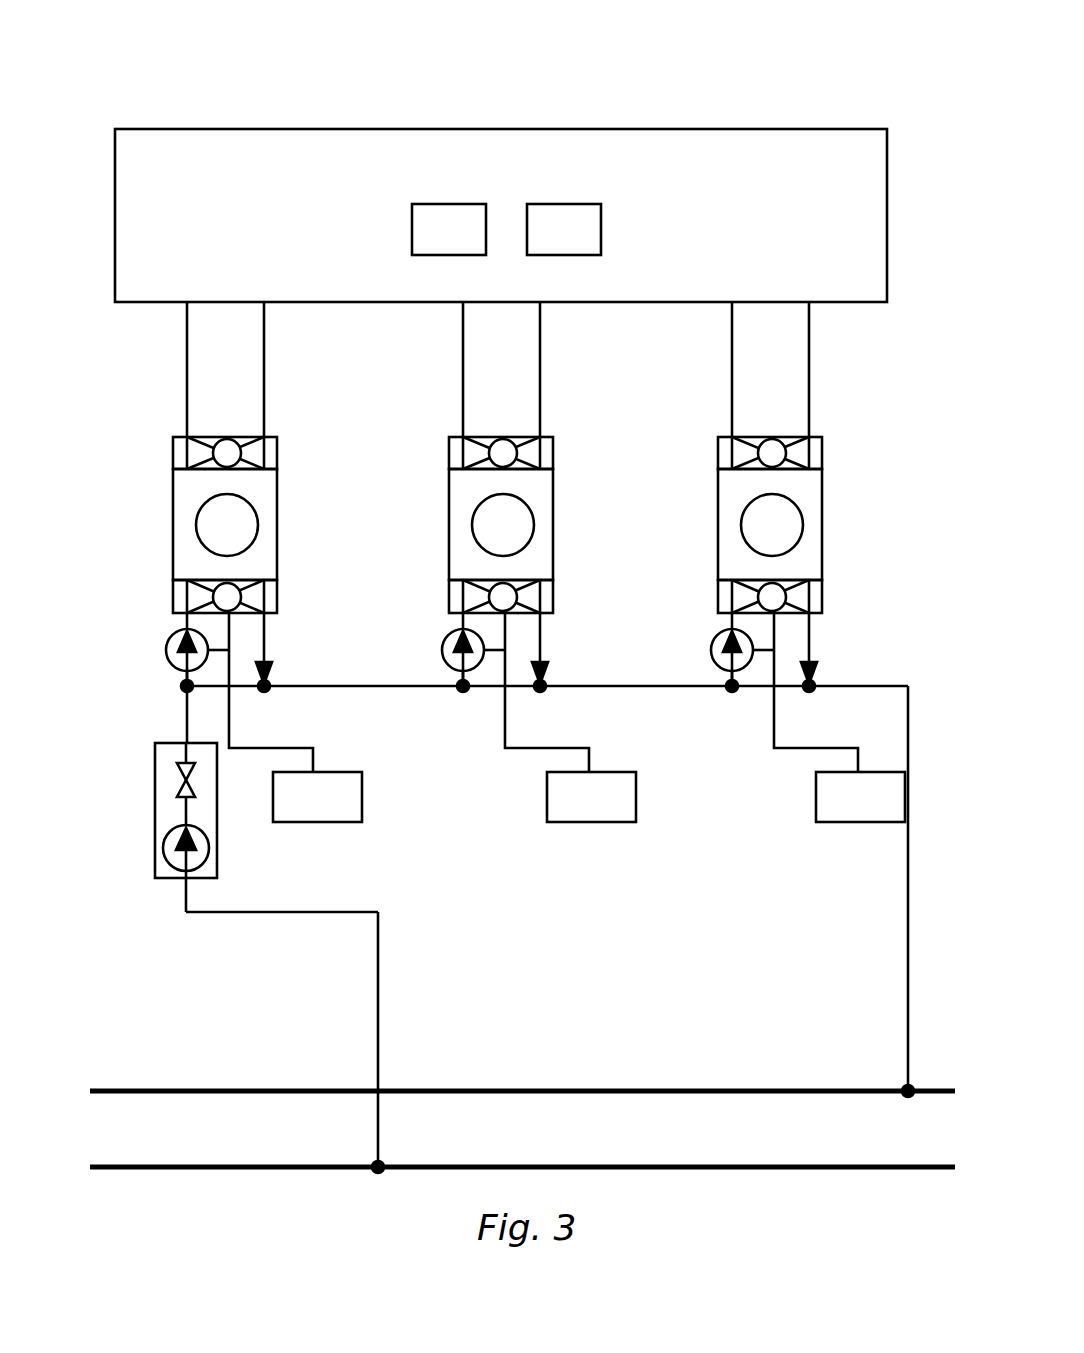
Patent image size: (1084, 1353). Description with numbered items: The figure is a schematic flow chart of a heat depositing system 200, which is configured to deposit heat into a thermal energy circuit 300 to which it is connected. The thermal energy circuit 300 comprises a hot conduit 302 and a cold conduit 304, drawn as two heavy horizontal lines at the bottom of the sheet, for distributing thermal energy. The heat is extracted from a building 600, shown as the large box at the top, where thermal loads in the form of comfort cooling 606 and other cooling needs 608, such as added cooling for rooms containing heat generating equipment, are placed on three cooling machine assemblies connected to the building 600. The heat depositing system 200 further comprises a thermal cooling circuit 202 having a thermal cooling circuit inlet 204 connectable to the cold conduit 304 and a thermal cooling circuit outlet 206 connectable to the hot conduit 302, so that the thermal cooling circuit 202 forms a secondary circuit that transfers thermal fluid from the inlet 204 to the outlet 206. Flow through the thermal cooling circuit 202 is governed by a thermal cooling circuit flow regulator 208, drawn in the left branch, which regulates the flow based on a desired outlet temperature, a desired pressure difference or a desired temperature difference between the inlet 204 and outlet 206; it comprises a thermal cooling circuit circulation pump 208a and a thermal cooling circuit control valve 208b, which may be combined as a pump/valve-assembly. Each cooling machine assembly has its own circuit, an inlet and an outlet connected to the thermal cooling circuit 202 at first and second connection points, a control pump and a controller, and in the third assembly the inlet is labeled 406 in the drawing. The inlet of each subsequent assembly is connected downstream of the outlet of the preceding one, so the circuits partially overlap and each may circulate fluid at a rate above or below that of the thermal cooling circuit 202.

The building 600 is at (410, 94).
The comfort cooling 606 is at (449, 229).
The other cooling needs 608 is at (564, 229).
The supply branch 406 is at (728, 684).
The thermal cooling circuit flow regulator 208 is at (131, 799).
The thermal cooling circuit circulation pump 208a is at (177, 858).
The thermal cooling circuit control valve 208b is at (180, 790).
The thermal cooling circuit 202 is at (315, 912).
The thermal cooling circuit inlet 204 is at (377, 1012).
The thermal cooling circuit outlet 206 is at (908, 1037).
The heat depositing system 200 is at (520, 945).
The thermal energy circuit 300 is at (508, 1110).
The hot conduit 302 is at (96, 1090).
The cold conduit 304 is at (140, 1168).